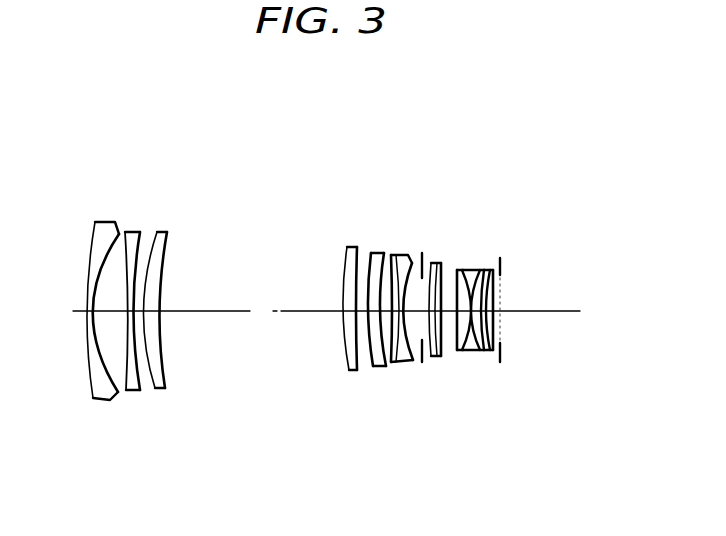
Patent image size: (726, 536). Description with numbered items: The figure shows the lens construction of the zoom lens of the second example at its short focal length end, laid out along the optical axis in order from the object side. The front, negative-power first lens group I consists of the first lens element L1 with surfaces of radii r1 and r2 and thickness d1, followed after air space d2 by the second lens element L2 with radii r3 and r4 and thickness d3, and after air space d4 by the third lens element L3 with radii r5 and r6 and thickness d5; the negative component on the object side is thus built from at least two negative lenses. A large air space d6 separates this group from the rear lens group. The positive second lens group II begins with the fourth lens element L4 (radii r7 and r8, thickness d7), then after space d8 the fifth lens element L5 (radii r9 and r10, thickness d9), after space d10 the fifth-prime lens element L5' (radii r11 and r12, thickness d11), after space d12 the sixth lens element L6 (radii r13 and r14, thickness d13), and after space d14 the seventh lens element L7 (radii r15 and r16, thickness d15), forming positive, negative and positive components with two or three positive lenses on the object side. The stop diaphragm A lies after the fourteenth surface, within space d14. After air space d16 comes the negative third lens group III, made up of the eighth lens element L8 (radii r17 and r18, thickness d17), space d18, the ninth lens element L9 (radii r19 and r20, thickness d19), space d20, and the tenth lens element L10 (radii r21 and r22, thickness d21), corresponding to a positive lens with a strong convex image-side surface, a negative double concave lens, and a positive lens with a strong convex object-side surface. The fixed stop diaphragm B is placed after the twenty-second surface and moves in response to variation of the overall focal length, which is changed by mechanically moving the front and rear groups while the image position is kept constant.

The first lens group I is at (183, 112).
The second lens group II is at (243, 140).
The third lens group III is at (462, 140).
The first lens element L1 is at (77, 287).
The second lens element L2 is at (110, 301).
The third lens element L3 is at (169, 311).
The fourth lens element L4 is at (302, 298).
The fifth lens element L5 is at (336, 311).
The fifth-prime lens element L5' is at (370, 335).
The sixth lens element L6 is at (419, 335).
The seventh lens element L7 is at (480, 346).
The eighth lens element L8 is at (506, 346).
The ninth lens element L9 is at (550, 323).
The tenth lens element L10 is at (579, 354).
The stop diaphragm A is at (433, 290).
The fixed stop diaphragm B is at (525, 299).
The radius of curvature of the first surface r1 is at (65, 278).
The radius of curvature of the second surface r2 is at (86, 255).
The radius of curvature of the third surface r3 is at (103, 275).
The radius of curvature of the fourth surface r4 is at (118, 255).
The radius of curvature of the fifth surface r5 is at (138, 274).
The radius of curvature of the sixth surface r6 is at (169, 274).
The radius of curvature of the seventh surface r7 is at (298, 282).
The radius of curvature of the eighth surface r8 is at (312, 264).
The radius of curvature of the ninth surface r9 is at (330, 280).
The radius of curvature of the tenth surface r10 is at (344, 262).
The radius of curvature of the eleventh surface r11 is at (359, 278).
The radius of curvature of the twelfth surface r12 is at (370, 260).
The radius of curvature of the thirteenth surface r13 is at (389, 277).
The radius of curvature of the fourteenth surface r14 is at (406, 257).
The radius of curvature of the fifteenth surface r15 is at (428, 275).
The radius of curvature of the sixteenth surface r16 is at (439, 257).
The radius of curvature of the seventeenth surface r17 is at (471, 274).
The radius of curvature of the eighteenth surface r18 is at (482, 255).
The radius of curvature of the nineteenth surface r19 is at (497, 274).
The radius of curvature of the twentieth surface r20 is at (512, 255).
The radius of curvature of the twenty-first surface r21 is at (524, 274).
The radius of curvature of the twenty-second surface r22 is at (536, 255).
The lens thickness with respect to the first surface d1 is at (68, 339).
The space with respect to the second surface d2 is at (87, 362).
The lens thickness with respect to the third surface d3 is at (111, 384).
The space with respect to the fourth surface d4 is at (160, 385).
The lens thickness with respect to the fifth surface d5 is at (181, 363).
The space with respect to the sixth surface d6 is at (254, 354).
The lens thickness with respect to the seventh surface d7 is at (322, 335).
The space with respect to the eighth surface d8 is at (331, 355).
The lens thickness with respect to the ninth surface d9 is at (351, 370).
The space with respect to the tenth surface d10 is at (362, 390).
The lens thickness with respect to the eleventh surface d11 is at (384, 379).
The space with respect to the twelfth surface d12 is at (409, 398).
The lens thickness with respect to the thirteenth surface d13 is at (424, 379).
The space with respect to the fourteenth surface d14 is at (439, 399).
The lens thickness with respect to the fifteenth surface d15 is at (462, 380).
The space with respect to the sixteenth surface d16 is at (482, 399).
The lens thickness with respect to the seventeenth surface d17 is at (499, 379).
The space with respect to the eighteenth surface d18 is at (523, 390).
The lens thickness with respect to the nineteenth surface d19 is at (543, 380).
The space with respect to the twentieth surface d20 is at (534, 363).
The lens thickness with respect to the twenty-first surface d21 is at (556, 351).